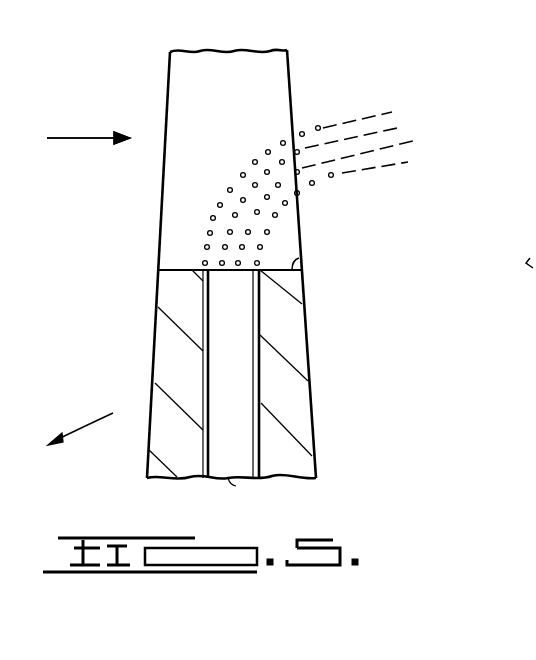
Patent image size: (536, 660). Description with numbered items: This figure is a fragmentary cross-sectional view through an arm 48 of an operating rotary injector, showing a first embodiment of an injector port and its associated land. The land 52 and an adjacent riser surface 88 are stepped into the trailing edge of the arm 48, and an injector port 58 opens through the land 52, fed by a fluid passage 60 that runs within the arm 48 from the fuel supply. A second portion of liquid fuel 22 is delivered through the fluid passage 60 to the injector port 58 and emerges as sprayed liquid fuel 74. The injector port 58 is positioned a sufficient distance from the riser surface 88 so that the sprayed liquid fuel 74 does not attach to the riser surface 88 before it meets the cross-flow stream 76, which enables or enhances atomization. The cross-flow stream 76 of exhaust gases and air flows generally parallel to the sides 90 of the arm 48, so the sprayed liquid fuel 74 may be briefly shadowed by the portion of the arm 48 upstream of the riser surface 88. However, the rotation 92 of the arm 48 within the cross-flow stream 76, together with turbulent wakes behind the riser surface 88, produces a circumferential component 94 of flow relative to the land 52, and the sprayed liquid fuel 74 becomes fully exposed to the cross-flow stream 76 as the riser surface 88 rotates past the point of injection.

The liquid fuel 22 is at (217, 460).
The radially-extending arm 48 is at (158, 293).
The land 52 is at (300, 258).
The injector port 58 is at (272, 256).
The fluid passage 60 is at (236, 484).
The sprayed liquid fuel 74 is at (314, 121).
The cross-flow stream 76 is at (78, 136).
The riser surface 88 is at (242, 114).
The sides of the arm 90 is at (162, 202).
The rotation of the arm 92 is at (81, 422).
The circumferential component of flow 94 is at (88, 102).